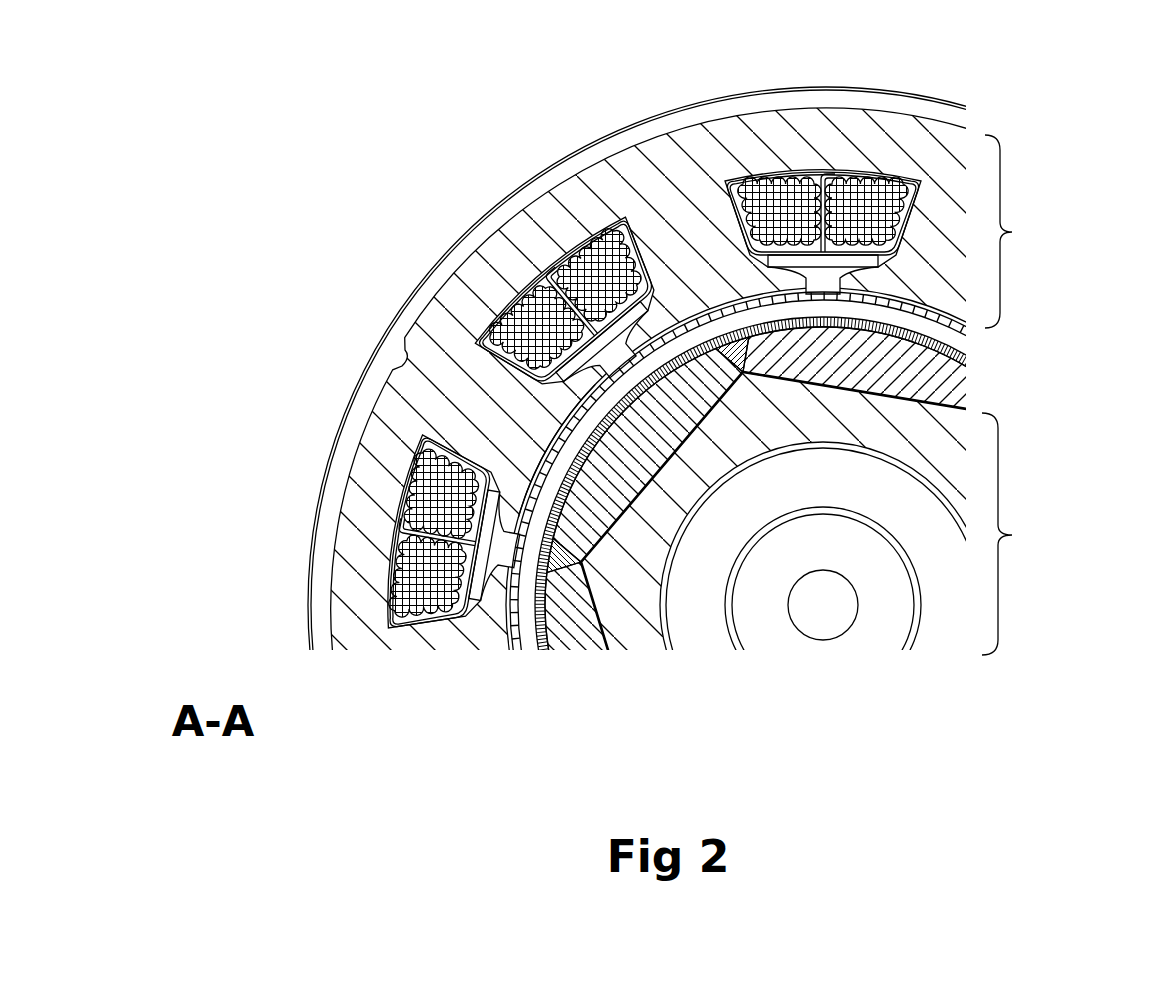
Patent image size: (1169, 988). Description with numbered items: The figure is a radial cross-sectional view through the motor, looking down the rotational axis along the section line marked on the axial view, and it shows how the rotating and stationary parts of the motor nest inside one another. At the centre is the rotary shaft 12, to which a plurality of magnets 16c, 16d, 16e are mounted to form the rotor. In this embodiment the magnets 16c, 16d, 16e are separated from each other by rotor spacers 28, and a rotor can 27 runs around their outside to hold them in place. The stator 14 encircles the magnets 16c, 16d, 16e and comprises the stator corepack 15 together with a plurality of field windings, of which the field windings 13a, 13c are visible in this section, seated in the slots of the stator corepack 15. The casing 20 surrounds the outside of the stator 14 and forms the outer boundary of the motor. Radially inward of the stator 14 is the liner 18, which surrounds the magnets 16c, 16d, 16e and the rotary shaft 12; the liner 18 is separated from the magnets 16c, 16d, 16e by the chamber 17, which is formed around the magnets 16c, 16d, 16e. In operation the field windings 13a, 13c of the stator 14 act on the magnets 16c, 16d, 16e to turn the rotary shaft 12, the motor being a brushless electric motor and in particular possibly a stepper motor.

The rotary shaft 12 is at (1013, 534).
The stator 14 is at (1015, 231).
The field winding 13a is at (583, 253).
The field winding 13c is at (860, 181).
The stator corepack 15 is at (690, 216).
The chamber 17 is at (944, 335).
The liner 18 is at (558, 432).
The casing 20 is at (425, 303).
The magnet 16c is at (933, 363).
The magnet 16d is at (622, 468).
The magnet 16e is at (572, 627).
The rotor can 27 is at (542, 634).
The rotor spacer 28 is at (565, 558).